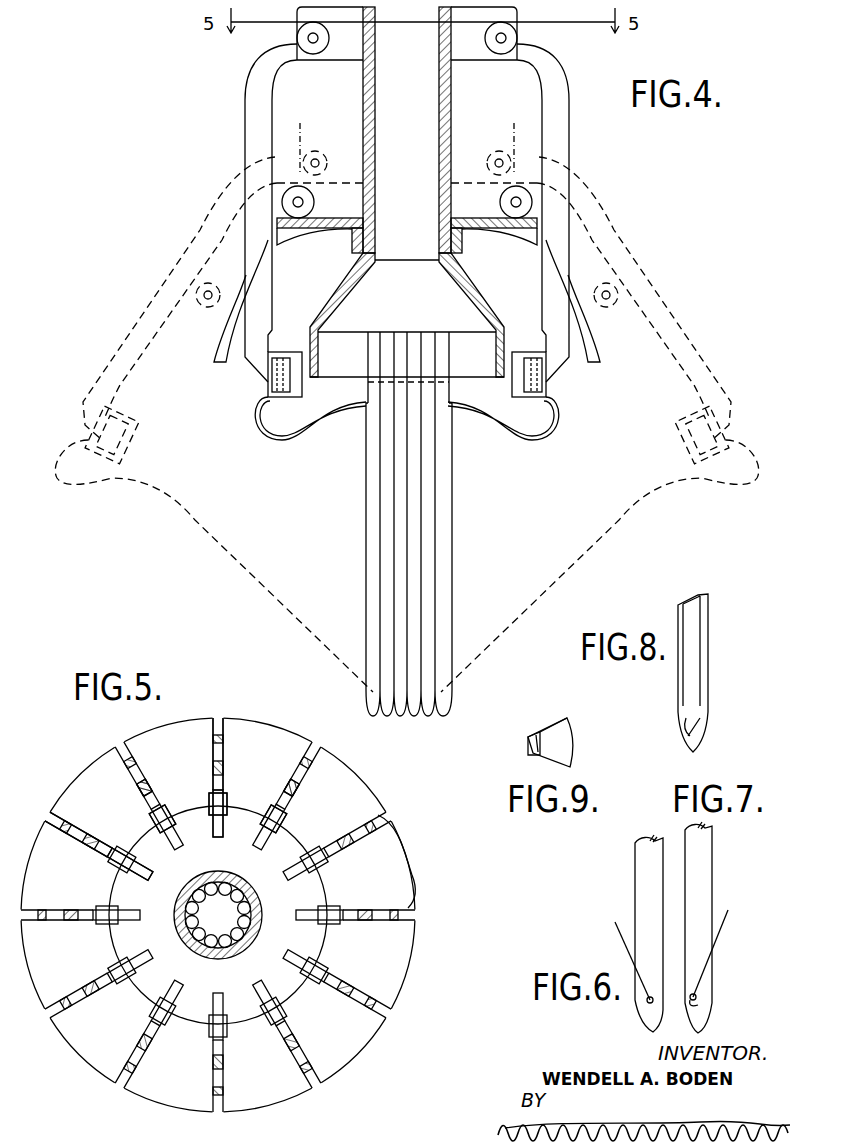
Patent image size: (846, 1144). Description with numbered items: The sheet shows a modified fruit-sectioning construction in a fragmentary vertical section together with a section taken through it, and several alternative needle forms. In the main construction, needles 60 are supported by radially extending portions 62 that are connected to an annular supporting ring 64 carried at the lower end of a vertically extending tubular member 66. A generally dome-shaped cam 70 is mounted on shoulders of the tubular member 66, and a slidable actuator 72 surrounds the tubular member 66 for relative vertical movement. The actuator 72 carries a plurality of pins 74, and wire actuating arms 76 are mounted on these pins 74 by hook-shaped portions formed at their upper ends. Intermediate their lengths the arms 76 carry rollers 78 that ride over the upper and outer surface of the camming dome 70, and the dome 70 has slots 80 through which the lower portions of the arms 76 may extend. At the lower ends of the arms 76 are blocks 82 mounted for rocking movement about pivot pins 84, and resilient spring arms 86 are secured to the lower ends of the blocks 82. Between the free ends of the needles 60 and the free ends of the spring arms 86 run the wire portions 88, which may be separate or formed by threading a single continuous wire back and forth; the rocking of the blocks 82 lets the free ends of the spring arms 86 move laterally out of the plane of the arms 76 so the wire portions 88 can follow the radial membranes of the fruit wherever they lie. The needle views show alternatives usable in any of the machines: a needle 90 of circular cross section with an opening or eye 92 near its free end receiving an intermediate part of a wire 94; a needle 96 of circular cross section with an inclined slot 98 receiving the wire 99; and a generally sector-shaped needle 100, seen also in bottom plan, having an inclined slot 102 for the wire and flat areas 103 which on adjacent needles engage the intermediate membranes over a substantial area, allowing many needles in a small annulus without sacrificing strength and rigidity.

In FIG. 4, the needles 60 is at (450, 470).
In FIG. 5, the needles 60 is at (245, 890).
In FIG. 4, the radially extending portions 62 is at (352, 340).
In FIG. 4, the annular supporting ring 64 is at (470, 330).
In FIG. 4, the tubular member 66 is at (452, 112).
In FIG. 5, the tubular member 66 is at (210, 875).
In FIG. 4, the dome-shaped cam 70 is at (315, 232).
In FIG. 5, the dome-shaped cam 70 is at (48, 982).
In FIG. 4, the slidable actuator 72 is at (342, 60).
In FIG. 5, the slidable actuator 72 is at (243, 815).
In FIG. 4, the pins 74 is at (297, 39).
In FIG. 5, the pins 74 is at (212, 822).
In FIG. 4, the wire actuating arms 76 is at (245, 108).
In FIG. 5, the wire actuating arms 76 is at (88, 841).
In FIG. 4, the rollers 78 is at (407, 202).
In FIG. 5, the rollers 78 is at (122, 848).
In FIG. 4, the slots 80 is at (220, 345).
In FIG. 5, the slots 80 is at (415, 905).
In FIG. 4, the blocks 82 is at (296, 352).
In FIG. 4, the pivot pins 84 is at (283, 358).
In FIG. 4, the resilient spring arms 86 is at (305, 420).
In FIG. 4, the wire portions 88 is at (366, 440).
In FIG. 6, the needle 90 is at (637, 883).
In FIG. 6, the opening or eye 92 is at (645, 1003).
In FIG. 6, the wire 94 is at (618, 940).
In FIG. 7, the needle 96 is at (708, 876).
In FIG. 7, the inclined slot 98 is at (700, 1003).
In FIG. 7, the wire 99 is at (728, 915).
In FIG. 8, the needle 100 is at (708, 680).
In FIG. 9, the needle 100 is at (580, 723).
In FIG. 8, the inclined slot 102 is at (705, 725).
In FIG. 9, the inclined slot 102 is at (532, 742).
In FIG. 9, the flat areas 103 is at (553, 725).